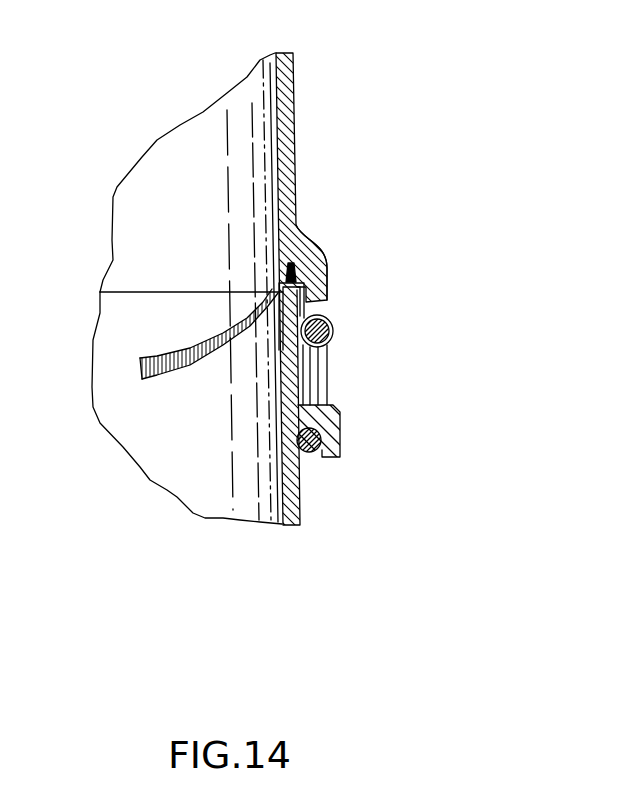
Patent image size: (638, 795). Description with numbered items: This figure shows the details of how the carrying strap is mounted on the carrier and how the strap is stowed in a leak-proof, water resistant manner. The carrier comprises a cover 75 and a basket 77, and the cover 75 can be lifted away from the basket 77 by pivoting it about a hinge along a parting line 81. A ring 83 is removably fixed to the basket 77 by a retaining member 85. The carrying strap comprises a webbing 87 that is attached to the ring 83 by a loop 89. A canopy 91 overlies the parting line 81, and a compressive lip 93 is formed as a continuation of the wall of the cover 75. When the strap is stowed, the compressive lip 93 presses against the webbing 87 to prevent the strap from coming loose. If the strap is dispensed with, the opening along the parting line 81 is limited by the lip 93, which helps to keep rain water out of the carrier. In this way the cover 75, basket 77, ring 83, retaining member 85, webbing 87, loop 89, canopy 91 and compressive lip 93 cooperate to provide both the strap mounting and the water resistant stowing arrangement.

The cover 75 is at (293, 148).
The basket 77 is at (200, 442).
The parting line 81 is at (211, 292).
The ring 83 is at (327, 367).
The retaining member 85 is at (330, 433).
The webbing 87 is at (153, 360).
The loop 89 is at (327, 314).
The canopy 91 is at (327, 287).
The compressive lip 93 is at (286, 274).